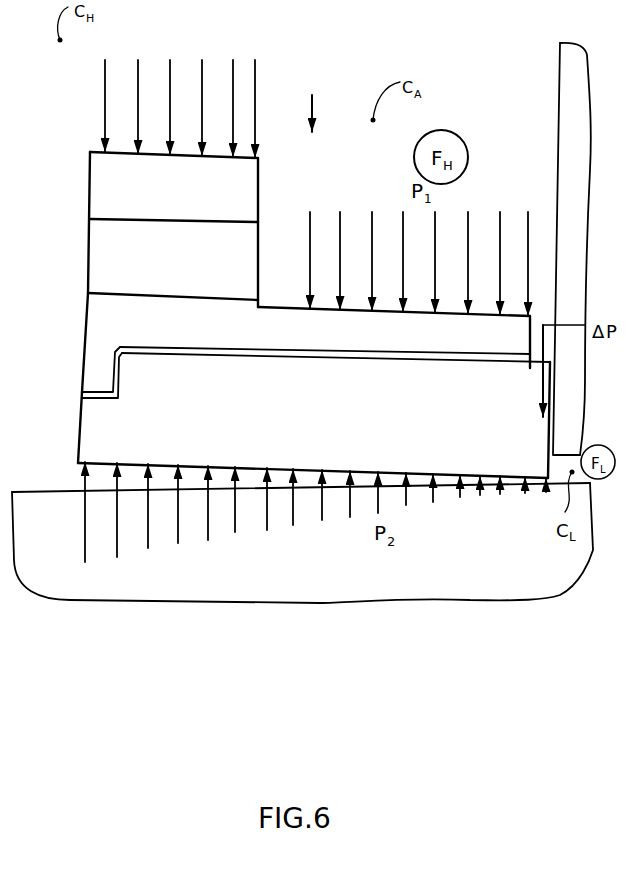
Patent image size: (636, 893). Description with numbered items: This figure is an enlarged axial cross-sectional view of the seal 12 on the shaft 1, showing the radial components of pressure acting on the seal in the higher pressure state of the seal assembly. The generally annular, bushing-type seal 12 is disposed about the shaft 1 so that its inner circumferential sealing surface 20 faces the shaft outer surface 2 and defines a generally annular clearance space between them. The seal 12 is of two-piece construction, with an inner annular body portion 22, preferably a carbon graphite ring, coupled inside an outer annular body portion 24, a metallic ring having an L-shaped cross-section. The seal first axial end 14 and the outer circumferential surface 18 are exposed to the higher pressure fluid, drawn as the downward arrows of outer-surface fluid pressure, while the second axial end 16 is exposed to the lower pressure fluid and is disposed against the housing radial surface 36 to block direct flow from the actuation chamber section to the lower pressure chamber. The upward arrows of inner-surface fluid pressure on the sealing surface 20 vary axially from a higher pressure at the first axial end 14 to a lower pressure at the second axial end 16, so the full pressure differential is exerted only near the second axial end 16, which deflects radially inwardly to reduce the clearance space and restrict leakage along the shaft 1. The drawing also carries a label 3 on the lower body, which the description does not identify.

The shaft 1 is at (143, 582).
The outer surface 2 is at (41, 492).
The second component 3 is at (443, 581).
The seal 12 is at (317, 100).
The first axial end 14 is at (86, 322).
The second axial end 16 is at (557, 403).
The outer circumferential surface 18 is at (352, 308).
The inner circumferential sealing surface 20 is at (307, 478).
The inner annular body portion 22 is at (90, 423).
The outer annular body portion 24 is at (122, 228).
The radial surface 36 is at (559, 120).